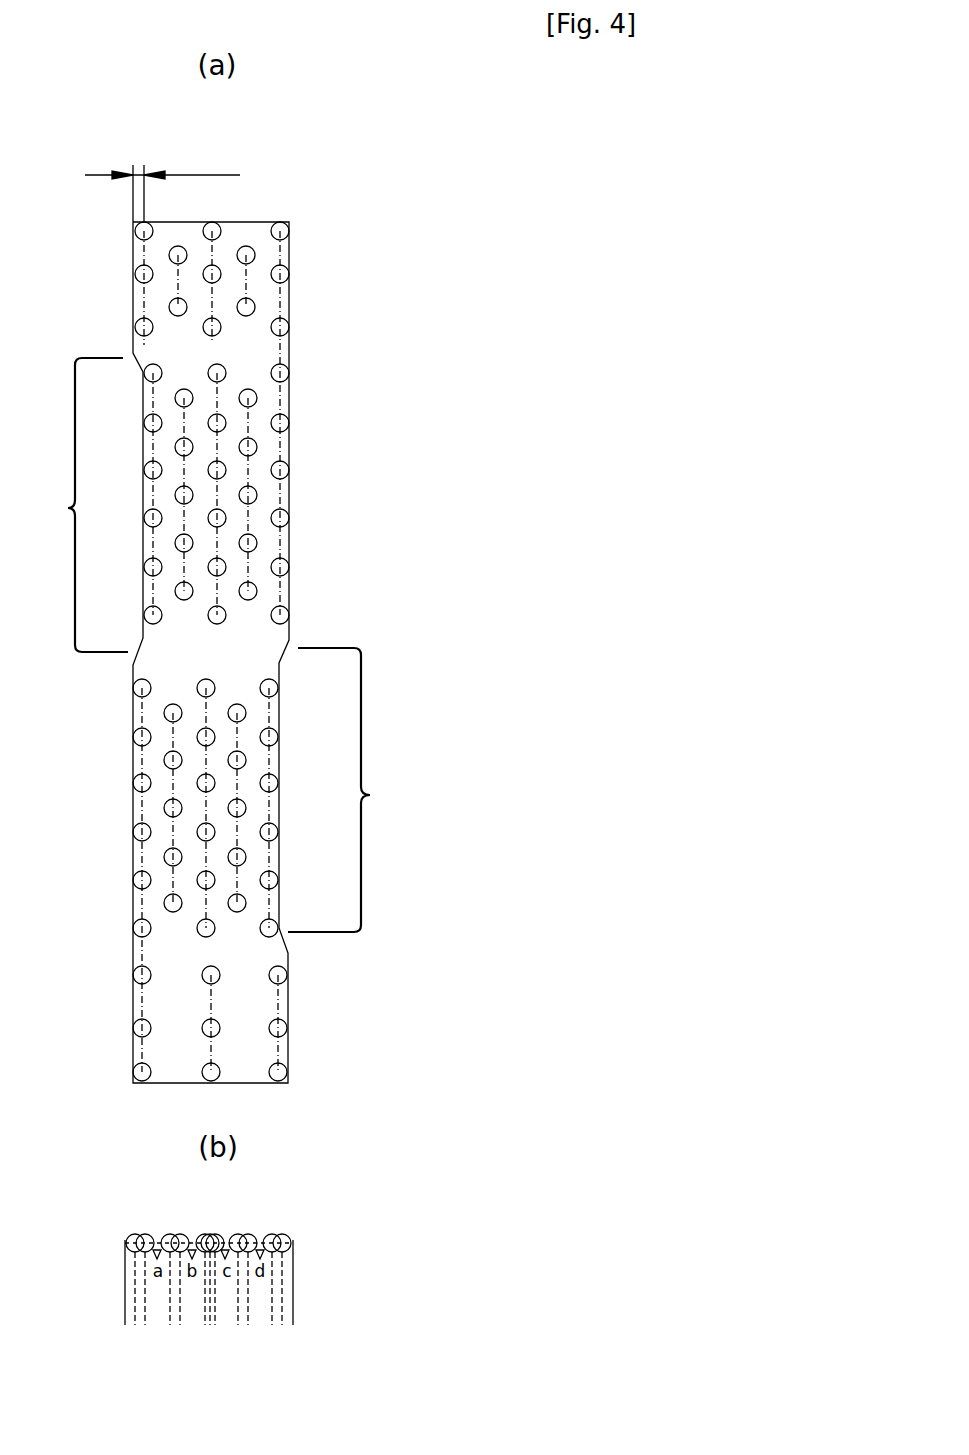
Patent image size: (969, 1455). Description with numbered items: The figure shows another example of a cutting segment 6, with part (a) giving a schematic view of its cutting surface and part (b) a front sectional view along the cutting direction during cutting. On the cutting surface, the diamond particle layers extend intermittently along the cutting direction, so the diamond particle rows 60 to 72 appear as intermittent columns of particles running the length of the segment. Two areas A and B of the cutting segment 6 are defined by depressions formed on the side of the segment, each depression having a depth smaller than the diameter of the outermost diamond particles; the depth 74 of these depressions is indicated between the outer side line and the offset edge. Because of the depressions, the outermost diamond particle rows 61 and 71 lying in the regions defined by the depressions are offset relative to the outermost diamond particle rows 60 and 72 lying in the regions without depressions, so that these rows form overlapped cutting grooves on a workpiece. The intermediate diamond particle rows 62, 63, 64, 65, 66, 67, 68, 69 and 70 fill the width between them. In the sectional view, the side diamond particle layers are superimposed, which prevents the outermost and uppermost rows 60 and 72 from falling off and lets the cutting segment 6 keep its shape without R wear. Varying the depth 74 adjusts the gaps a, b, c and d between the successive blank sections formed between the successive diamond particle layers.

The cutting segment 6 is at (210, 124).
The outermost diamond particle row 60 is at (140, 230).
The outermost diamond particle row 61 is at (145, 368).
The diamond particle row 62 is at (172, 758).
The diamond particle row 63 is at (175, 253).
The diamond particle row 64 is at (183, 397).
The diamond particle row 65 is at (207, 684).
The diamond particle row 66 is at (217, 230).
The diamond particle row 67 is at (217, 372).
The diamond particle row 68 is at (240, 758).
The diamond particle row 69 is at (253, 255).
The diamond particle row 70 is at (250, 398).
The outermost diamond particle row 71 is at (273, 688).
The outermost diamond particle row 72 is at (287, 230).
The depth of depressions 74 is at (162, 163).
The area A is at (87, 505).
The area B is at (340, 790).